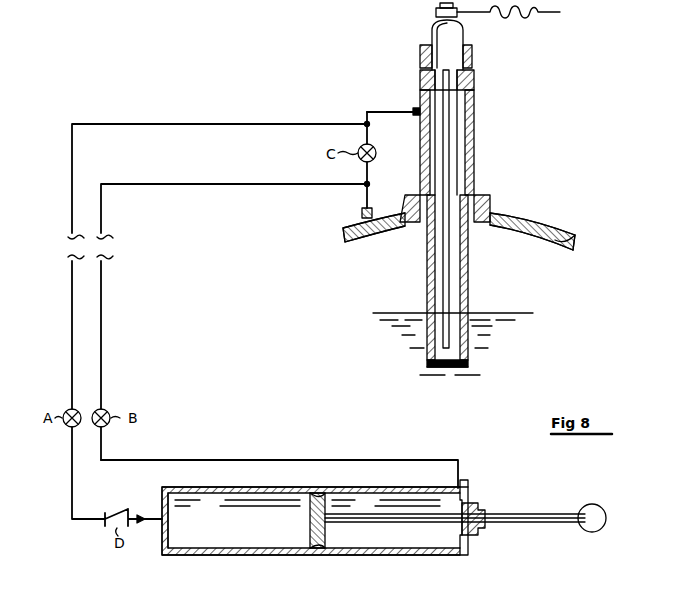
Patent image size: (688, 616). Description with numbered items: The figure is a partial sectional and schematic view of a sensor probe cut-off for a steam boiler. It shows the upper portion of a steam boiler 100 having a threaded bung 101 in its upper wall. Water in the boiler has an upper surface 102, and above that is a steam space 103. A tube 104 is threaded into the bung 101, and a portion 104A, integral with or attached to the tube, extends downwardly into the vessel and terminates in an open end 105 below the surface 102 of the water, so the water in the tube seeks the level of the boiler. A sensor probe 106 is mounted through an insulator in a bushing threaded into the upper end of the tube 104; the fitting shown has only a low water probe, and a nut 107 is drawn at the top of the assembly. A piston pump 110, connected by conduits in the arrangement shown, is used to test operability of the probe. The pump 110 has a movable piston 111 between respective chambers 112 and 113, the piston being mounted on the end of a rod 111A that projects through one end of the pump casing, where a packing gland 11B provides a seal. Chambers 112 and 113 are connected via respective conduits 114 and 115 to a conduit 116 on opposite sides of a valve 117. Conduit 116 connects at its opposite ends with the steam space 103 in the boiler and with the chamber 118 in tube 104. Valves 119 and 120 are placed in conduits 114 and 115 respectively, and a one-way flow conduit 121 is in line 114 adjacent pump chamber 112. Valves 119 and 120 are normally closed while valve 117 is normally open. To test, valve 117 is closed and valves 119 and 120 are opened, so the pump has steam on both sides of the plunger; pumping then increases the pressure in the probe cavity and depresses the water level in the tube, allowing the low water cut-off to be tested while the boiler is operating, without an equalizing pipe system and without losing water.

The steam boiler 100 is at (510, 217).
The threaded bung 101 is at (474, 196).
The upper surface of water 102 is at (480, 313).
The steam space 103 is at (552, 238).
The tube 104 is at (468, 124).
The downwardly extending tube portion 104A is at (468, 270).
The open end 105 is at (462, 366).
The sensor probe 106 is at (452, 150).
The hex nut 107 is at (472, 50).
The piston pump 110 is at (425, 556).
The movable piston 111 is at (310, 530).
The rod 111A is at (500, 514).
The packing gland 11B is at (485, 495).
The pump chamber 112 is at (220, 556).
The pump chamber 113 is at (362, 556).
The conduit 114 is at (72, 460).
The conduit 115 is at (235, 460).
The conduit 116 is at (380, 112).
The valve 117 is at (376, 154).
The chamber 118 is at (466, 97).
The valve 119 is at (66, 406).
The valve 120 is at (106, 406).
The one-way flow conduit 121 is at (118, 510).